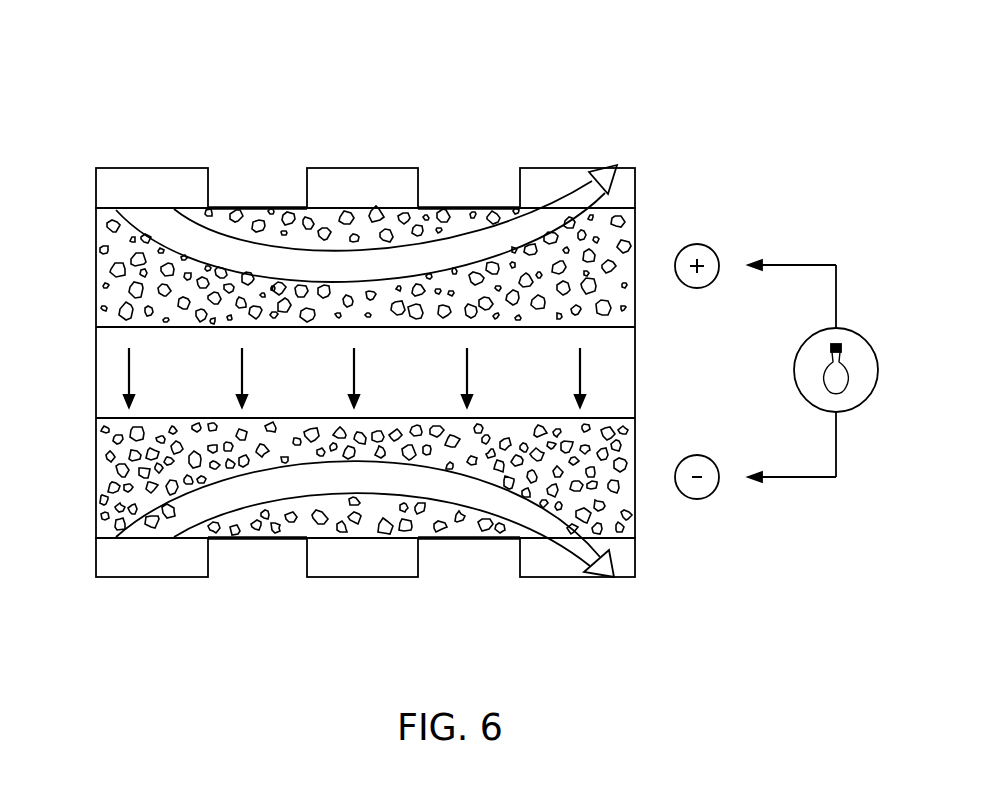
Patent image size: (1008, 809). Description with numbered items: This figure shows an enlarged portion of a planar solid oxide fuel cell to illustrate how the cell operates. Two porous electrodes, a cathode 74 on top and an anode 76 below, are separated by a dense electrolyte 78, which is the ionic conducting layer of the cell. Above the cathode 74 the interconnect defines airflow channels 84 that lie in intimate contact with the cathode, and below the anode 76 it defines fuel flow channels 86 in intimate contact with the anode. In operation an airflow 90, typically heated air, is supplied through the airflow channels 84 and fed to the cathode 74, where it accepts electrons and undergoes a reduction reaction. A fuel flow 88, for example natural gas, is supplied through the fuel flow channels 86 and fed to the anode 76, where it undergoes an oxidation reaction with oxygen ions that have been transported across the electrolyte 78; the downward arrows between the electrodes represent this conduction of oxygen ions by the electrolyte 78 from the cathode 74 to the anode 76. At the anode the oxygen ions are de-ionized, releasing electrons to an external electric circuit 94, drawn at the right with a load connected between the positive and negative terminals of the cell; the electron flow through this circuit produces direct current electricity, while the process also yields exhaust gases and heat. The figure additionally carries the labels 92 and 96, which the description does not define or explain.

The cathode 74 is at (96, 270).
The anode 76 is at (96, 479).
The electrolyte 78 is at (96, 374).
The airflow channels 84 is at (363, 168).
The fuel flow channels 86 is at (362, 577).
The fuel flow 88 is at (148, 532).
The airflow 90 is at (148, 213).
The electrical circuit / conductor 92 is at (836, 297).
The external electric circuit 94 is at (857, 408).
The dense interconnect layer 96 is at (469, 205).